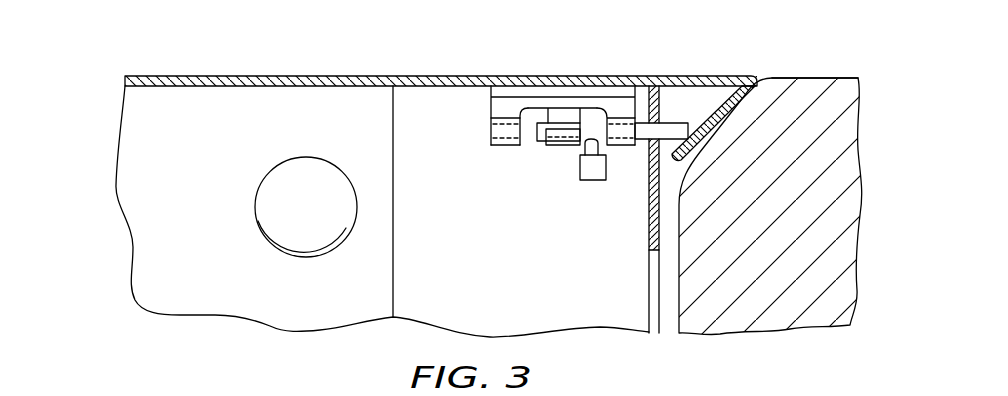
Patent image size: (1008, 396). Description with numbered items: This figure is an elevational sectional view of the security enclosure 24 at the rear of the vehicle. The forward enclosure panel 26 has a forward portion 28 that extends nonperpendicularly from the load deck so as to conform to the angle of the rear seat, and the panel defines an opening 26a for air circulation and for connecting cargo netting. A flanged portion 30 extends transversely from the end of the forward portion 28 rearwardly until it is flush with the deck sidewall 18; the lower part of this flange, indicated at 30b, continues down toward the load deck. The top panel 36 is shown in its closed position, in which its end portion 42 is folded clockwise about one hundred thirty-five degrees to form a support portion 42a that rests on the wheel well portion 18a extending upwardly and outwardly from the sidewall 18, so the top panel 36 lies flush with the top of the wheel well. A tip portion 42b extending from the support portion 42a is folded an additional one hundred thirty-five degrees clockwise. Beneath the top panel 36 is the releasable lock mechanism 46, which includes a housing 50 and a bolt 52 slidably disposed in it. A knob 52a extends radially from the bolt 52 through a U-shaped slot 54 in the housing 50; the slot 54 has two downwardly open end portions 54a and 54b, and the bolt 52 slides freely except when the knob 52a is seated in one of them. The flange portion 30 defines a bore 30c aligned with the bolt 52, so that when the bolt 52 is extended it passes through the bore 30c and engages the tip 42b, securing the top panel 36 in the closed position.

The deck sidewall 18 is at (677, 336).
The wheel well portion 18a is at (818, 77).
The security enclosure 24 is at (340, 66).
The forward enclosure panel 26 is at (123, 76).
The opening 26a is at (275, 173).
The forward portion 28 is at (118, 135).
The flanged portion 30 is at (648, 219).
The lower wall portion 30b is at (649, 252).
The bore 30c is at (650, 137).
The top panel 36 is at (422, 76).
The end portion 42 is at (683, 65).
The support portion 42a is at (728, 97).
The tip portion 42b is at (668, 129).
The releasable lock mechanism 46 is at (490, 97).
The housing 50 is at (501, 145).
The bolt 52 is at (543, 145).
The knob 52a is at (580, 168).
The U-shaped slot 54 is at (535, 108).
The end portion 54a is at (524, 145).
The end portion 54b is at (596, 110).